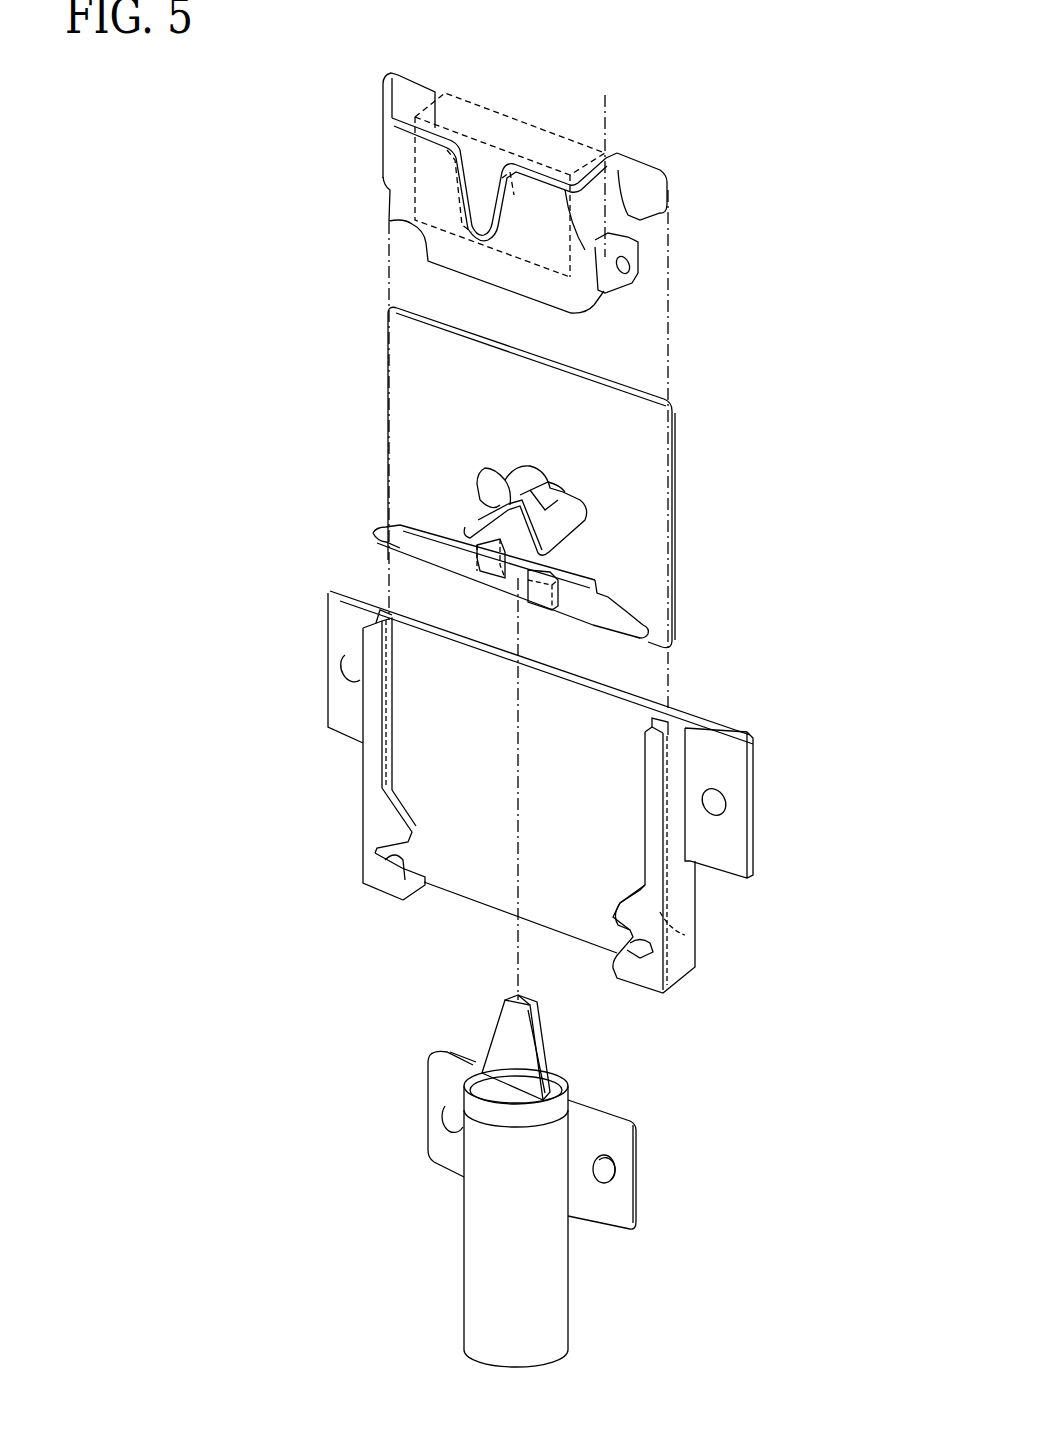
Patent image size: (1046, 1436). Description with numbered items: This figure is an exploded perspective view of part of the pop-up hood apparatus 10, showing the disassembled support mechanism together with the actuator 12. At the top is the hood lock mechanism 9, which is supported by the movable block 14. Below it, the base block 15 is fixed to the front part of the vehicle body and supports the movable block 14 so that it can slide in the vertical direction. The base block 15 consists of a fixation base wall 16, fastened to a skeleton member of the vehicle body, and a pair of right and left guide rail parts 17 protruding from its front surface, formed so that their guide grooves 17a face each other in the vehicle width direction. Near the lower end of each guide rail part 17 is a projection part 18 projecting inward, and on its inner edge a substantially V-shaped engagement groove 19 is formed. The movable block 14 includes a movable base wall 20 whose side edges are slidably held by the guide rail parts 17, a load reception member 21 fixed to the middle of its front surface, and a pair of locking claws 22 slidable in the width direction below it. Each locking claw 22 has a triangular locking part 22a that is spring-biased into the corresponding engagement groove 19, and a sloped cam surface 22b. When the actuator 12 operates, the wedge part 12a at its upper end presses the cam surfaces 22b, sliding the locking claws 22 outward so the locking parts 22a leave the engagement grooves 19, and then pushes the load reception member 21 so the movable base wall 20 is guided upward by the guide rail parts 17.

The hood lock mechanism 9 is at (647, 152).
The holder assembly 10 is at (748, 137).
The actuator 12 is at (551, 1181).
The wedge part 12a is at (540, 1048).
The movable block 14 is at (552, 483).
The base block 15 is at (544, 827).
The fixation base wall 16 is at (560, 880).
The guide rail part 17 is at (544, 792).
The guide groove 17a is at (383, 626).
The projection part 18 is at (387, 826).
The engagement groove 19 is at (402, 870).
The movable base wall 20 is at (595, 432).
The load reception member 21 is at (500, 476).
The locking claw 22 is at (526, 538).
The locking part 22a is at (383, 527).
The cam surface 22b is at (520, 565).